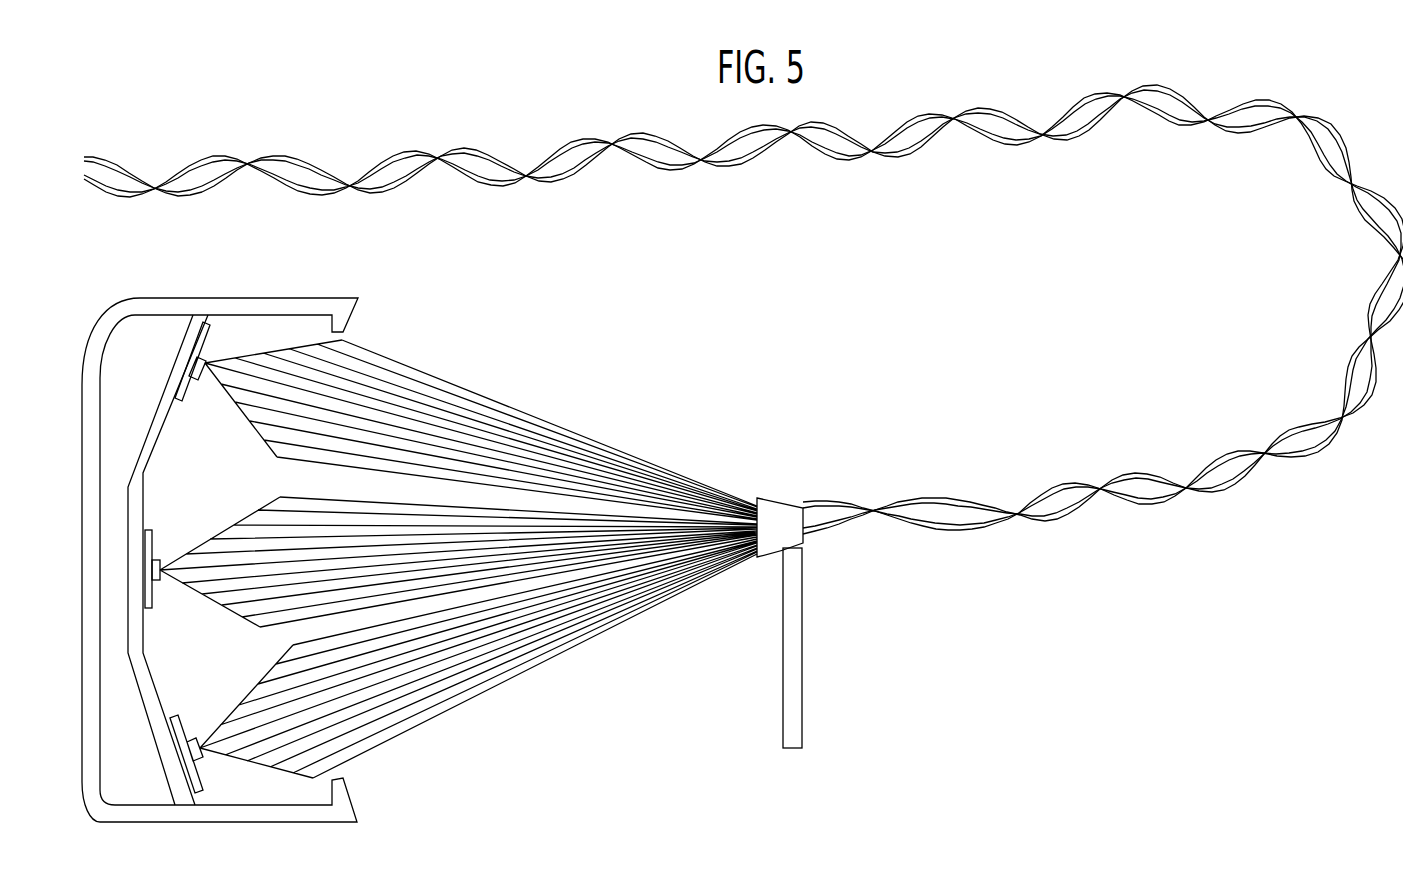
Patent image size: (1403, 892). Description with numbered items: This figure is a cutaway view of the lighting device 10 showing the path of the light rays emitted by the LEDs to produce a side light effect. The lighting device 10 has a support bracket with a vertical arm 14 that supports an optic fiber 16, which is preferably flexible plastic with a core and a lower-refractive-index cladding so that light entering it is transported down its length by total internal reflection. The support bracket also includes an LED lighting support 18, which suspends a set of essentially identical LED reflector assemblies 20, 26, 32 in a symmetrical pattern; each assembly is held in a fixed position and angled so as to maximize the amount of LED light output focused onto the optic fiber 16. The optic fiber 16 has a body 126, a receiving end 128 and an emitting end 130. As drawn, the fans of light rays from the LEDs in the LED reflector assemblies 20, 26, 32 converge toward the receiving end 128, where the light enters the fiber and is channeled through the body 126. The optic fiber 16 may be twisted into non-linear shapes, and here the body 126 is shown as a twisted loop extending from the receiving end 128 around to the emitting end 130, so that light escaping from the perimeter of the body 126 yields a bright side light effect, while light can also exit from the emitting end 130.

The lighting device 10 is at (497, 366).
The vertical arm 14 is at (800, 652).
The optic fiber 16 is at (956, 527).
The LED lighting support 18 is at (157, 408).
The LED reflector assembly 20 is at (177, 397).
The LED reflector assembly 26 is at (145, 593).
The LED reflector assembly 32 is at (170, 782).
The body 126 is at (985, 135).
The receiving end 128 is at (786, 500).
The emitting end 130 is at (84, 172).